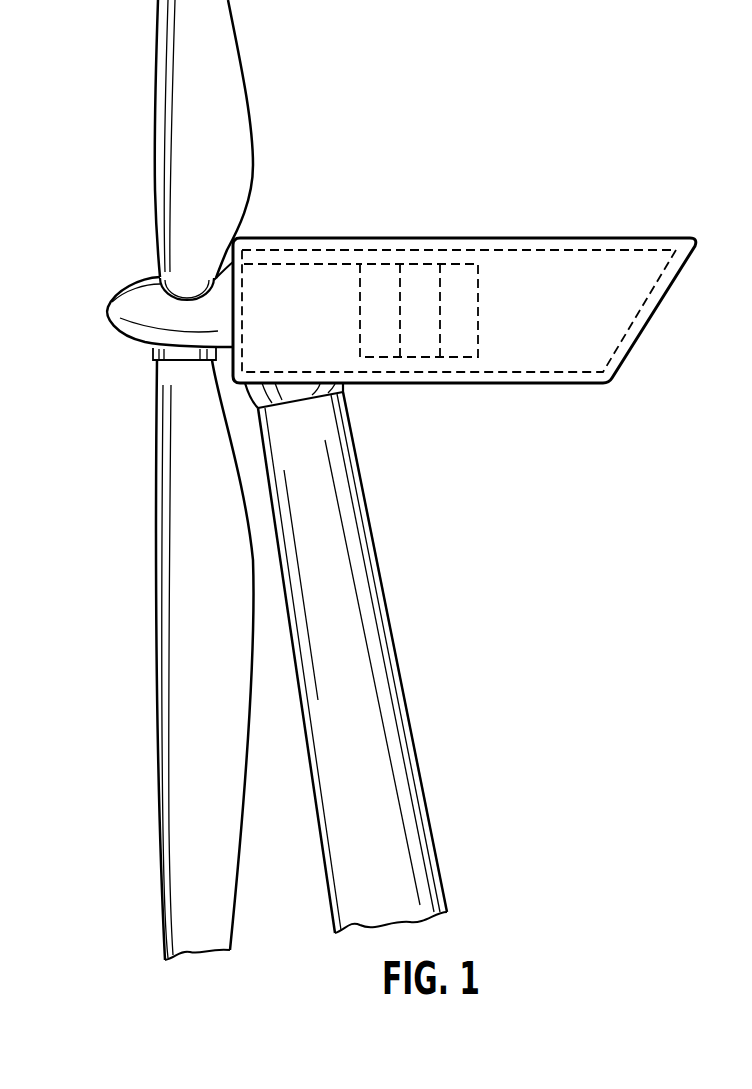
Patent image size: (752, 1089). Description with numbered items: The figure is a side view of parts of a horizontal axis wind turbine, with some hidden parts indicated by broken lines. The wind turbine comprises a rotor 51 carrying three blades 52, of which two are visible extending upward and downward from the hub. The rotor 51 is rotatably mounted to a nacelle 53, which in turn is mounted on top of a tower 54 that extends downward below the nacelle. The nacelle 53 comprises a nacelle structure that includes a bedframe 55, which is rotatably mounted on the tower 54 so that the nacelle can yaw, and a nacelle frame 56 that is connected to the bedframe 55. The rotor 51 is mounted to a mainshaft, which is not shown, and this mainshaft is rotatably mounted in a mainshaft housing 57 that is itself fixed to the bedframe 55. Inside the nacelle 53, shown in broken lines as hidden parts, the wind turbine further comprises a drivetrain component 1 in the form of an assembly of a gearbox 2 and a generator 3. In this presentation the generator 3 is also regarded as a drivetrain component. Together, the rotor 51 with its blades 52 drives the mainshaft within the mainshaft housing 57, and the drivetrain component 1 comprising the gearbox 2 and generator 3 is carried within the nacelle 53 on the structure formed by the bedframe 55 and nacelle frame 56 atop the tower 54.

The drivetrain component 1 is at (440, 260).
The gearbox 2 is at (430, 326).
The generator 3 is at (465, 298).
The rotor 51 is at (100, 262).
The blades 52 is at (157, 101).
The nacelle 53 is at (612, 240).
The tower 54 is at (385, 636).
The bedframe 55 is at (345, 388).
The nacelle frame 56 is at (566, 372).
The mainshaft housing 57 is at (318, 263).